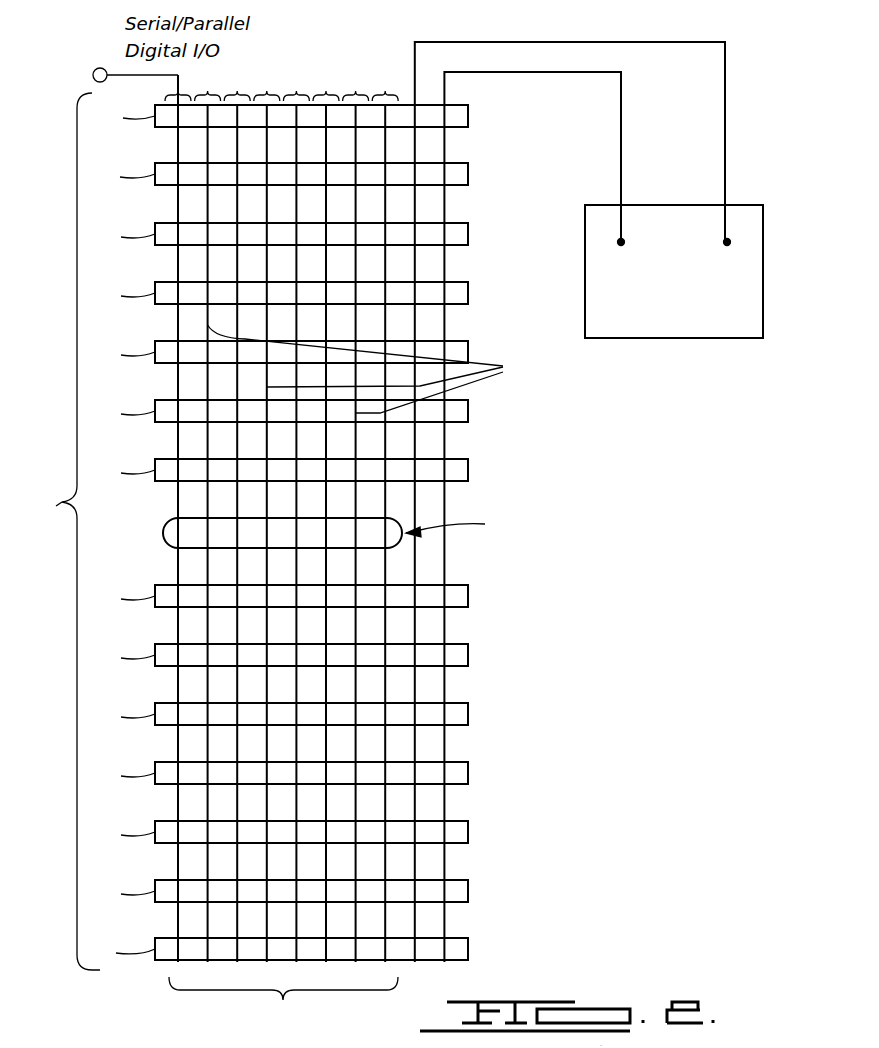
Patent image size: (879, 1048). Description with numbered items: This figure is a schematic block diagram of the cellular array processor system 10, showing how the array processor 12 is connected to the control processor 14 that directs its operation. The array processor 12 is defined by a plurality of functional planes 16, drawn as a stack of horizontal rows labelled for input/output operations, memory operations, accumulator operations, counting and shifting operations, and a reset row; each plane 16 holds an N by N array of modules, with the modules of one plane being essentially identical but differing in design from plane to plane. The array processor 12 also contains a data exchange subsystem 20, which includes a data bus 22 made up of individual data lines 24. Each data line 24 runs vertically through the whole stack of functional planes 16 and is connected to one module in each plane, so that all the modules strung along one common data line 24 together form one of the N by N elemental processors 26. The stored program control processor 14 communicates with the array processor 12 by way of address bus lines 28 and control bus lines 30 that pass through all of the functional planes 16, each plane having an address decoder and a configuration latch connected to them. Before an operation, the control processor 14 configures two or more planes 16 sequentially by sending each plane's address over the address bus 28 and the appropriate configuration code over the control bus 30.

The cellular array processor system 10 is at (566, 616).
The array processor 12 is at (347, 44).
The control processor 14 is at (713, 338).
The functional planes 16 is at (94, 531).
The data exchange subsystem 20 is at (283, 1004).
The data bus 22 is at (399, 555).
The data lines 24 is at (375, 369).
The elemental processors 26 is at (344, 90).
The address bus lines 28 is at (621, 123).
The control bus lines 30 is at (725, 81).